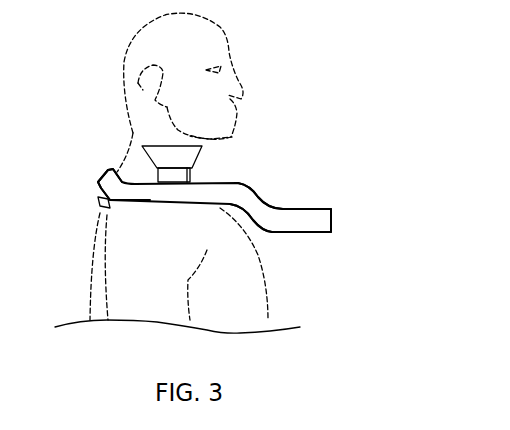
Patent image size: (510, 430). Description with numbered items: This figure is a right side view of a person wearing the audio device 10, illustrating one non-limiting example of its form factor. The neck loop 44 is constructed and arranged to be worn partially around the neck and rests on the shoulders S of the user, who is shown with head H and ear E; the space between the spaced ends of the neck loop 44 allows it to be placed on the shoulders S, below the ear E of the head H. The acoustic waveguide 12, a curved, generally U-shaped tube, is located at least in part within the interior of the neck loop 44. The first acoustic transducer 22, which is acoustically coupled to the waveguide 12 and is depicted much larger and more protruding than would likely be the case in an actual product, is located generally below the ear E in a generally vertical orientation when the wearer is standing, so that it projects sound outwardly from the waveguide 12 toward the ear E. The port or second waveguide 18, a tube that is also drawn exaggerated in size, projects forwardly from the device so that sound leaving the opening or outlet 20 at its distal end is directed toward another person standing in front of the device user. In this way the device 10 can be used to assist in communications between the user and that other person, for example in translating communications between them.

The audio device 10 is at (221, 179).
The acoustic waveguide 12 is at (102, 188).
The port or second waveguide 18 is at (287, 210).
The opening or outlet 20 is at (333, 220).
The first acoustic transducer 22 is at (203, 151).
The neck loop 44 is at (102, 179).
The head H is at (218, 38).
The ear E is at (142, 84).
The shoulders S is at (128, 210).